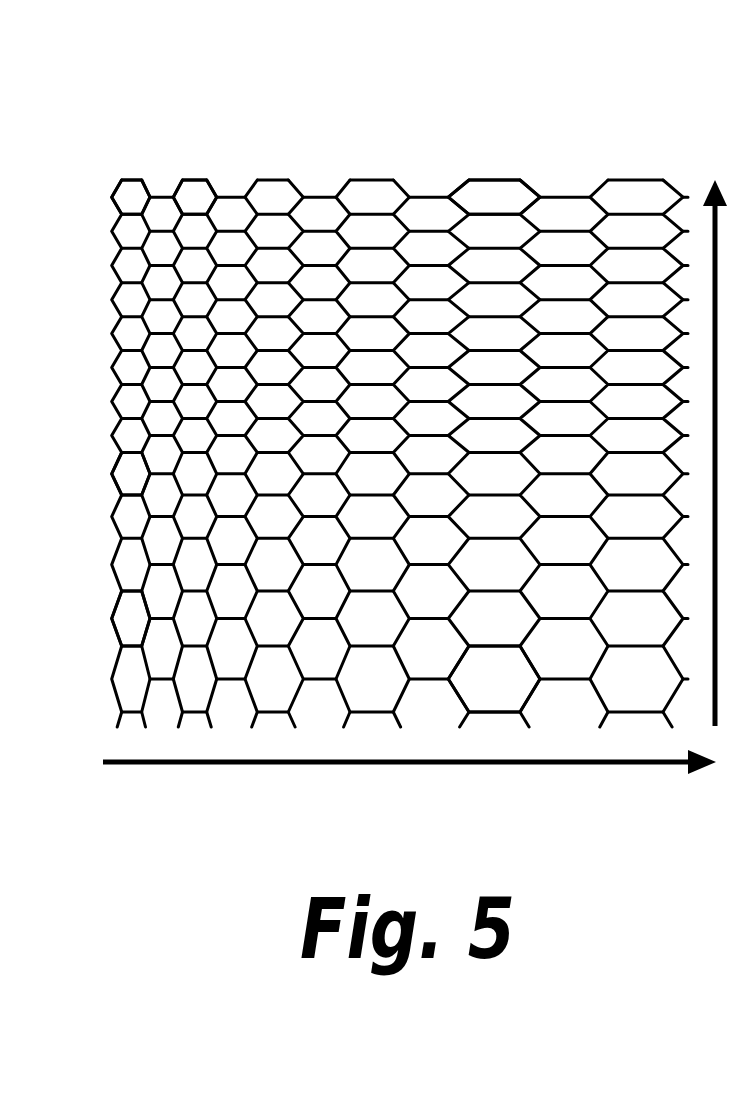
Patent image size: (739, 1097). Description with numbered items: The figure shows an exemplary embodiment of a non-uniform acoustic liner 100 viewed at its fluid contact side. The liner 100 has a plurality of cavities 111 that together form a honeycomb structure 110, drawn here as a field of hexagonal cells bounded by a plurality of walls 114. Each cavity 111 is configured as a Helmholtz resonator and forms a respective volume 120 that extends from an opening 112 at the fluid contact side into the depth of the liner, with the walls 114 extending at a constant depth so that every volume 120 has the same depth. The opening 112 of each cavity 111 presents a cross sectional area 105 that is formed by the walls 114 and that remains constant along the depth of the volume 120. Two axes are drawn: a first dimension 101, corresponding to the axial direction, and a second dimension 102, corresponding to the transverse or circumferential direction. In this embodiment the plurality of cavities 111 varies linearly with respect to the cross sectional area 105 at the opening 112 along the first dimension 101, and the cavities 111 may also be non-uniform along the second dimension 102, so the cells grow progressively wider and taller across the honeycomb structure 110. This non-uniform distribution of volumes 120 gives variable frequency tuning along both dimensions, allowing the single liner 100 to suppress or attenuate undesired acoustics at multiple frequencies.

The liner 100 is at (422, 107).
The honeycomb structure 110 is at (520, 153).
The volume 120 is at (202, 210).
The cavity 111 is at (90, 215).
The opening 112 is at (128, 470).
The walls 114 is at (118, 633).
The cross sectional area 105 is at (522, 688).
The first dimension 101 is at (223, 764).
The second dimension 102 is at (713, 720).